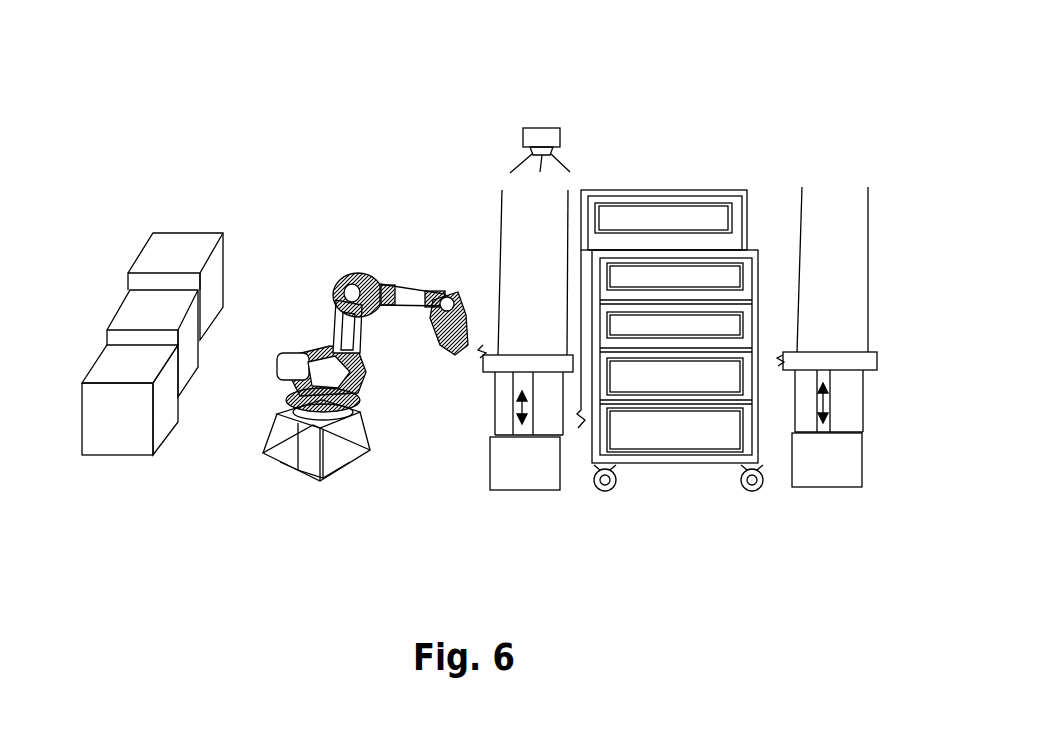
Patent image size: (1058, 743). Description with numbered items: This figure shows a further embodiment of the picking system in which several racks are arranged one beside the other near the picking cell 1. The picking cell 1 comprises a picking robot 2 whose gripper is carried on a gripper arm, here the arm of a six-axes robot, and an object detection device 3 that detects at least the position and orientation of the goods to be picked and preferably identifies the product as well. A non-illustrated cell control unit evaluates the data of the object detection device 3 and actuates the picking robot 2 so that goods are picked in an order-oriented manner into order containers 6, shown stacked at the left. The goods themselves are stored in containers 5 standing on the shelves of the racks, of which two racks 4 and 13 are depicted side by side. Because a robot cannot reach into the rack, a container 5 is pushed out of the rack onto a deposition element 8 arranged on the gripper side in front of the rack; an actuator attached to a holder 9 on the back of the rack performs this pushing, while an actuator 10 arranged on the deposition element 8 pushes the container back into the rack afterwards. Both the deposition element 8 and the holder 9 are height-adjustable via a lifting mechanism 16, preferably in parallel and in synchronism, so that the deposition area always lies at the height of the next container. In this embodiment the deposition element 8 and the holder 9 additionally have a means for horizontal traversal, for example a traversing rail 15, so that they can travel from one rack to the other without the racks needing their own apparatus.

The picking cell 1 is at (122, 87).
The picking robot 2 is at (365, 298).
The object detection device 3 is at (569, 88).
The rack 4 is at (670, 272).
The container 5 is at (676, 420).
The order container 6 is at (152, 280).
The deposition element 8 is at (494, 517).
The holder 9 is at (827, 516).
The actuator 10 is at (436, 399).
The rack 13 is at (696, 251).
The guide posts 15 is at (827, 238).
The lifting mechanism 16 is at (588, 500).